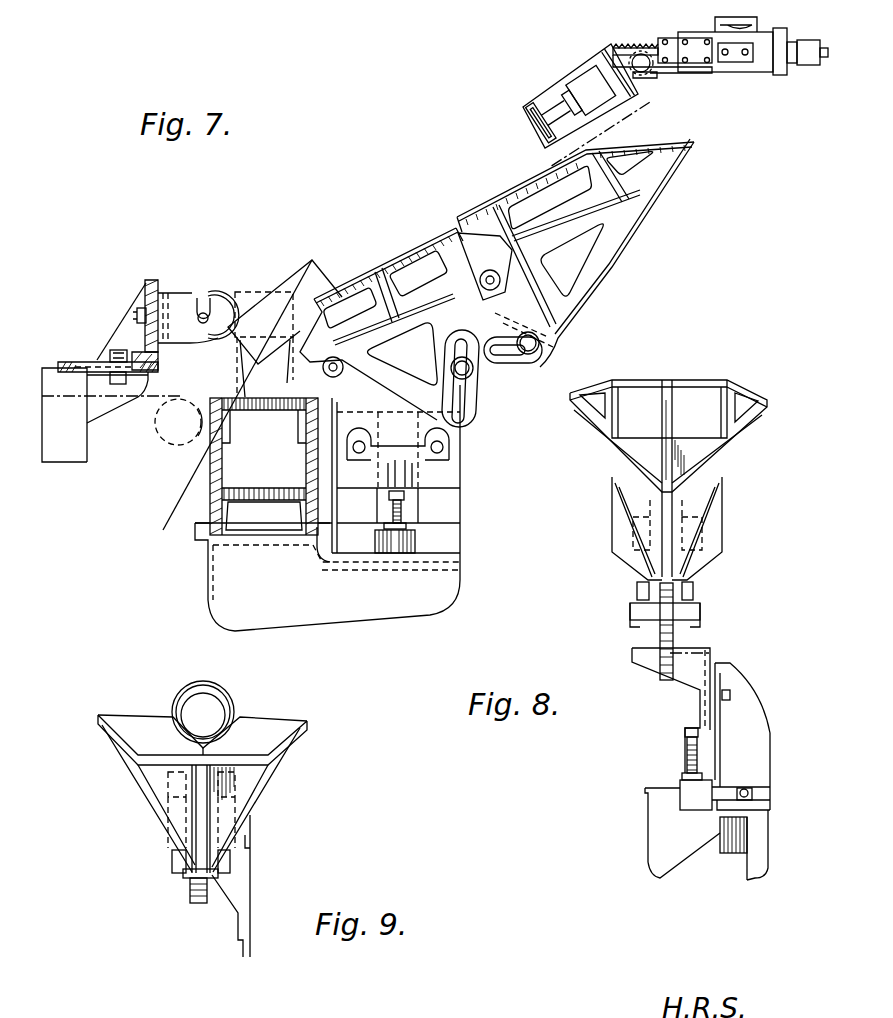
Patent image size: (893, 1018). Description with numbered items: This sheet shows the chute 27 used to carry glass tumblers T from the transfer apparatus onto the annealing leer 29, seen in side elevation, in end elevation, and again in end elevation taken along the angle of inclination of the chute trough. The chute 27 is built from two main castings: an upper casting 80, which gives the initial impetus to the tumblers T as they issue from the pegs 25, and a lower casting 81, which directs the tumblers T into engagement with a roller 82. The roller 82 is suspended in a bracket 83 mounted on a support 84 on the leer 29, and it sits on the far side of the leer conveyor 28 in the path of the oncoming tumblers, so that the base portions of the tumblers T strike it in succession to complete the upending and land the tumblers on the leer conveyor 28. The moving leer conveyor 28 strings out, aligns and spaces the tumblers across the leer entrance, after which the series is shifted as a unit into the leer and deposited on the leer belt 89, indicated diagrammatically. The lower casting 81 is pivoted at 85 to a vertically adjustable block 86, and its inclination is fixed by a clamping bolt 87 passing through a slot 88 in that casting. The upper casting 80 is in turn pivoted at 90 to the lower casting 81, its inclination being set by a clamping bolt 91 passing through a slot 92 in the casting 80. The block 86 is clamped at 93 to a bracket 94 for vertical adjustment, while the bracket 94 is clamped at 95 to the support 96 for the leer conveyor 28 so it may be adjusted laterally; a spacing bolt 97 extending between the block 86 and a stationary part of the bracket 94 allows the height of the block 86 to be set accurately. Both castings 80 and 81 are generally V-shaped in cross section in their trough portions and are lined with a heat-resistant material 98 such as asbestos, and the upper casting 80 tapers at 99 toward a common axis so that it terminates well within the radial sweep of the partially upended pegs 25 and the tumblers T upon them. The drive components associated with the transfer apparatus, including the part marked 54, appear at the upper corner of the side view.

In FIG. 7, the pegs 25 is at (640, 97).
In FIG. 7, the chute 27 is at (516, 270).
In FIG. 7, the leer conveyor 28 is at (228, 394).
In FIG. 7, the annealing leer 29 is at (70, 447).
In FIG. 7, the drive gear unit 54 is at (763, 65).
In FIG. 7, the upper casting 80 is at (490, 215).
In FIG. 8, the upper casting 80 is at (718, 445).
In FIG. 9, the upper casting 80 is at (303, 728).
In FIG. 7, the lower casting 81 is at (375, 266).
In FIG. 8, the lower casting 81 is at (718, 532).
In FIG. 7, the roller 82 is at (215, 291).
In FIG. 7, the bracket 83 is at (182, 302).
In FIG. 7, the support 84 is at (62, 363).
In FIG. 7, the pivot 85 is at (326, 372).
In FIG. 7, the vertically adjustable block 86 is at (447, 473).
In FIG. 8, the vertically adjustable block 86 is at (686, 645).
In FIG. 9, the vertically adjustable block 86 is at (238, 895).
In FIG. 7, the clamping bolt 87 is at (475, 368).
In FIG. 7, the slot 88 is at (470, 397).
In FIG. 7, the leer belt 89 is at (175, 507).
In FIG. 7, the pivot 90 is at (497, 284).
In FIG. 7, the clamping bolt 91 is at (538, 355).
In FIG. 8, the clamping bolt 91 is at (638, 586).
In FIG. 9, the clamping bolt 91 is at (174, 863).
In FIG. 7, the slot 92 is at (512, 362).
In FIG. 8, the clamp 93 is at (732, 694).
In FIG. 7, the bracket 94 is at (460, 503).
In FIG. 8, the bracket 94 is at (740, 732).
In FIG. 8, the clamp 95 is at (752, 790).
In FIG. 7, the support 96 is at (370, 597).
In FIG. 8, the support 96 is at (665, 848).
In FIG. 7, the spacing bolt 97 is at (403, 512).
In FIG. 8, the spacing bolt 97 is at (686, 758).
In FIG. 7, the heat-resistant material 98 is at (362, 300).
In FIG. 9, the heat-resistant material 98 is at (262, 728).
In FIG. 7, the taper 99 is at (694, 142).
In FIG. 9, the tumblers T is at (216, 683).